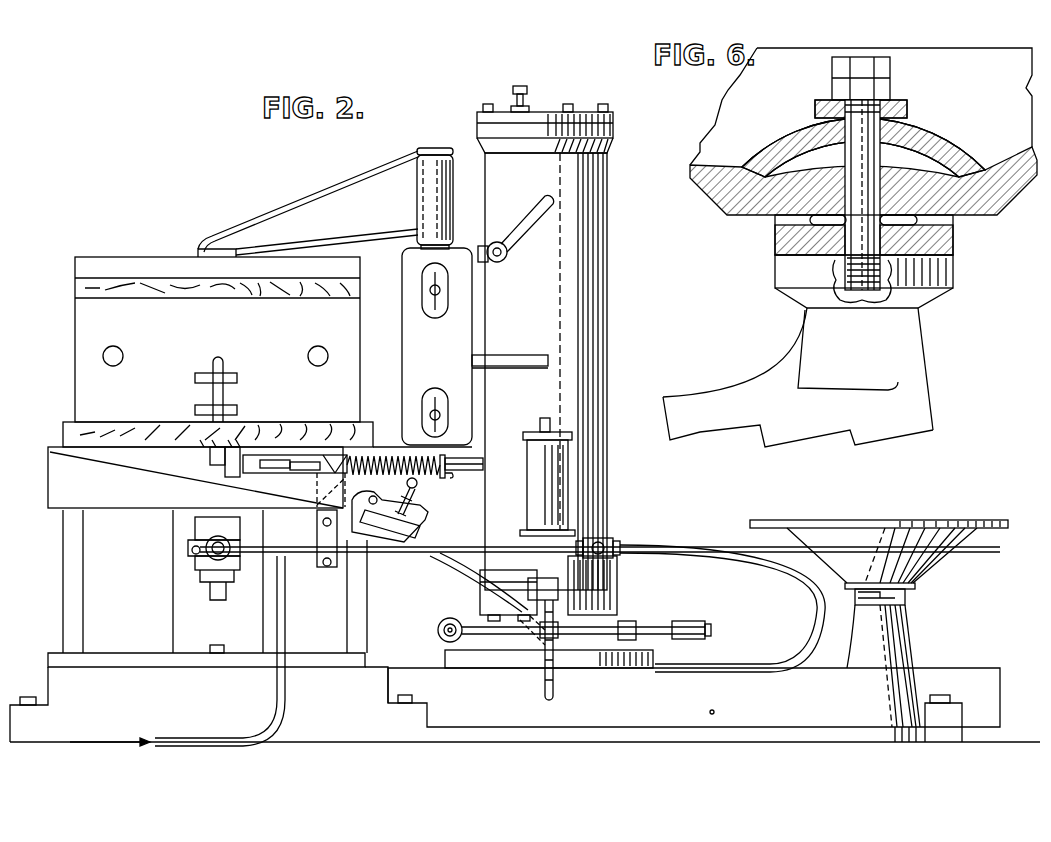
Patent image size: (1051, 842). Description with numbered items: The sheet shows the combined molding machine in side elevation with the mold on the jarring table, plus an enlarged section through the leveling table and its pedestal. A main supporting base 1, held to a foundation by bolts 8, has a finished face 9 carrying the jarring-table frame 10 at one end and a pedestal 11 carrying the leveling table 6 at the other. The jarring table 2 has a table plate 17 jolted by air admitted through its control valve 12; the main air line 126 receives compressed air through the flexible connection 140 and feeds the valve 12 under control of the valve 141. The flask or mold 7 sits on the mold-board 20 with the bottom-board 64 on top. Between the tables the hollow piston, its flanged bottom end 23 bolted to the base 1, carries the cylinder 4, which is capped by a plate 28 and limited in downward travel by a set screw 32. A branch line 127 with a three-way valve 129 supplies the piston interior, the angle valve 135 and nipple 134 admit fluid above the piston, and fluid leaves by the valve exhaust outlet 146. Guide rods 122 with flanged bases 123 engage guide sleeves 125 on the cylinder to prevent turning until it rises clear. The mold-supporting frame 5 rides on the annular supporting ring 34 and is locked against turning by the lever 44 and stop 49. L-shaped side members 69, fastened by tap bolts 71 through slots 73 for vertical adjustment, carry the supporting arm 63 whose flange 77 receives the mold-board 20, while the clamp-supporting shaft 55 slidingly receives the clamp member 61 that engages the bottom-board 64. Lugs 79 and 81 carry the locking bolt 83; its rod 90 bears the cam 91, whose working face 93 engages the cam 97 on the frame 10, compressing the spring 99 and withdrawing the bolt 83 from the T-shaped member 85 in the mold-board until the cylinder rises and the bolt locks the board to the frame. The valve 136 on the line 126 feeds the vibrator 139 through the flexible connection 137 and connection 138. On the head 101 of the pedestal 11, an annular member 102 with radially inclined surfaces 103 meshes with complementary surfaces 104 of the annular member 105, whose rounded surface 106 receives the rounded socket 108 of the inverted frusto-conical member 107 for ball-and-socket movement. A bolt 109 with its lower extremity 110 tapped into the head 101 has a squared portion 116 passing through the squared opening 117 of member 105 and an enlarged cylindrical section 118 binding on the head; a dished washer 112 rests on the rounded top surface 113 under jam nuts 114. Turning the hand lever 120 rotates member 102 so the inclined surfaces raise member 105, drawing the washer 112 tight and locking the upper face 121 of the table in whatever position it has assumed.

In FIG. 2, the main supporting base 1 is at (525, 705).
In FIG. 2, the jarring table 2 is at (38, 497).
In FIG. 2, the cylinder 4 is at (610, 243).
In FIG. 2, the mold-supporting and carrying frame 5 is at (398, 374).
In FIG. 2, the leveling table 6 is at (930, 520).
In FIG. 6, the leveling table 6 is at (685, 150).
In FIG. 2, the flask or mold 7 is at (60, 315).
In FIG. 2, the bolts 8 is at (940, 695).
In FIG. 2, the finished face 9 is at (130, 665).
In FIG. 2, the jarring-table frame 10 is at (63, 585).
In FIG. 2, the pedestal 11 is at (912, 623).
In FIG. 6, the pedestal 11 is at (925, 340).
In FIG. 2, the control valve 12 is at (188, 571).
In FIG. 2, the table plate 17 is at (48, 468).
In FIG. 2, the mold-board 20 is at (63, 433).
In FIG. 2, the flanged bottom end 23 is at (445, 656).
In FIG. 2, the plate 28 is at (613, 114).
In FIG. 2, the set screw 32 is at (528, 88).
In FIG. 2, the annular supporting ring 34 is at (488, 412).
In FIG. 2, the lever 44 is at (530, 212).
In FIG. 2, the stop 49 is at (480, 246).
In FIG. 2, the clamp-supporting shaft 55 is at (437, 150).
In FIG. 2, the sleeved clamp member 61 is at (320, 188).
In FIG. 2, the supporting arm 63 is at (167, 465).
In FIG. 2, the bottom-board 64 is at (137, 257).
In FIG. 2, the L-shaped side member 69 is at (492, 354).
In FIG. 2, the tap bolt 71 is at (440, 413).
In FIG. 2, the slot 73 is at (432, 305).
In FIG. 2, the flange 77 is at (132, 440).
In FIG. 2, the lug 79 is at (450, 476).
In FIG. 2, the lug 81 is at (245, 470).
In FIG. 2, the locking bolt 83 is at (285, 473).
In FIG. 2, the T-shaped member 85 is at (210, 478).
In FIG. 2, the rod 90 is at (483, 462).
In FIG. 2, the cam 91 is at (348, 481).
In FIG. 2, the working face 93 is at (318, 508).
In FIG. 2, the cam 97 is at (311, 538).
In FIG. 2, the spring 99 is at (380, 455).
In FIG. 6, the head 101 is at (955, 270).
In FIG. 6, the annular member 102 is at (778, 256).
In FIG. 2, the inclined surfaces 103 is at (865, 583).
In FIG. 6, the inclined surfaces 103 is at (955, 216).
In FIG. 2, the complementary surfaces 104 is at (906, 596).
In FIG. 6, the complementary surfaces 104 is at (780, 236).
In FIG. 6, the annular member 105 is at (758, 213).
In FIG. 6, the upper rounded surface 106 is at (982, 172).
In FIG. 6, the inverted frusto-conical member 107 is at (986, 90).
In FIG. 6, the rounded socket 108 is at (962, 155).
In FIG. 6, the bolt 109 is at (872, 57).
In FIG. 6, the lower extremity 110 is at (862, 296).
In FIG. 6, the dished washer 112 is at (903, 100).
In FIG. 6, the rounded top surface 113 is at (785, 138).
In FIG. 6, the jam nuts 114 is at (825, 78).
In FIG. 6, the squared portion 116 is at (880, 188).
In FIG. 6, the squared opening 117 is at (840, 190).
In FIG. 6, the lower enlarged cylindrical section 118 is at (840, 256).
In FIG. 2, the hand lever 120 is at (880, 605).
In FIG. 2, the upper face 121 is at (862, 520).
In FIG. 6, the upper face 121 is at (982, 56).
In FIG. 2, the guide rod 122 is at (612, 627).
In FIG. 2, the flanged bases 123 is at (518, 648).
In FIG. 2, the guide sleeve 125 is at (565, 466).
In FIG. 2, the main air line 126 is at (398, 554).
In FIG. 2, the branch line 127 is at (545, 678).
In FIG. 2, the three-way valve 129 is at (528, 592).
In FIG. 2, the nipple 134 is at (680, 623).
In FIG. 2, the angle valve 135 is at (440, 624).
In FIG. 2, the valve 136 is at (614, 542).
In FIG. 2, the flexible connection 137 is at (705, 544).
In FIG. 2, the connection 138 is at (418, 490).
In FIG. 2, the vibrator 139 is at (430, 527).
In FIG. 2, the flexible connection 140 is at (287, 708).
In FIG. 2, the valve 141 is at (188, 545).
In FIG. 2, the valve exhaust outlet 146 is at (618, 590).